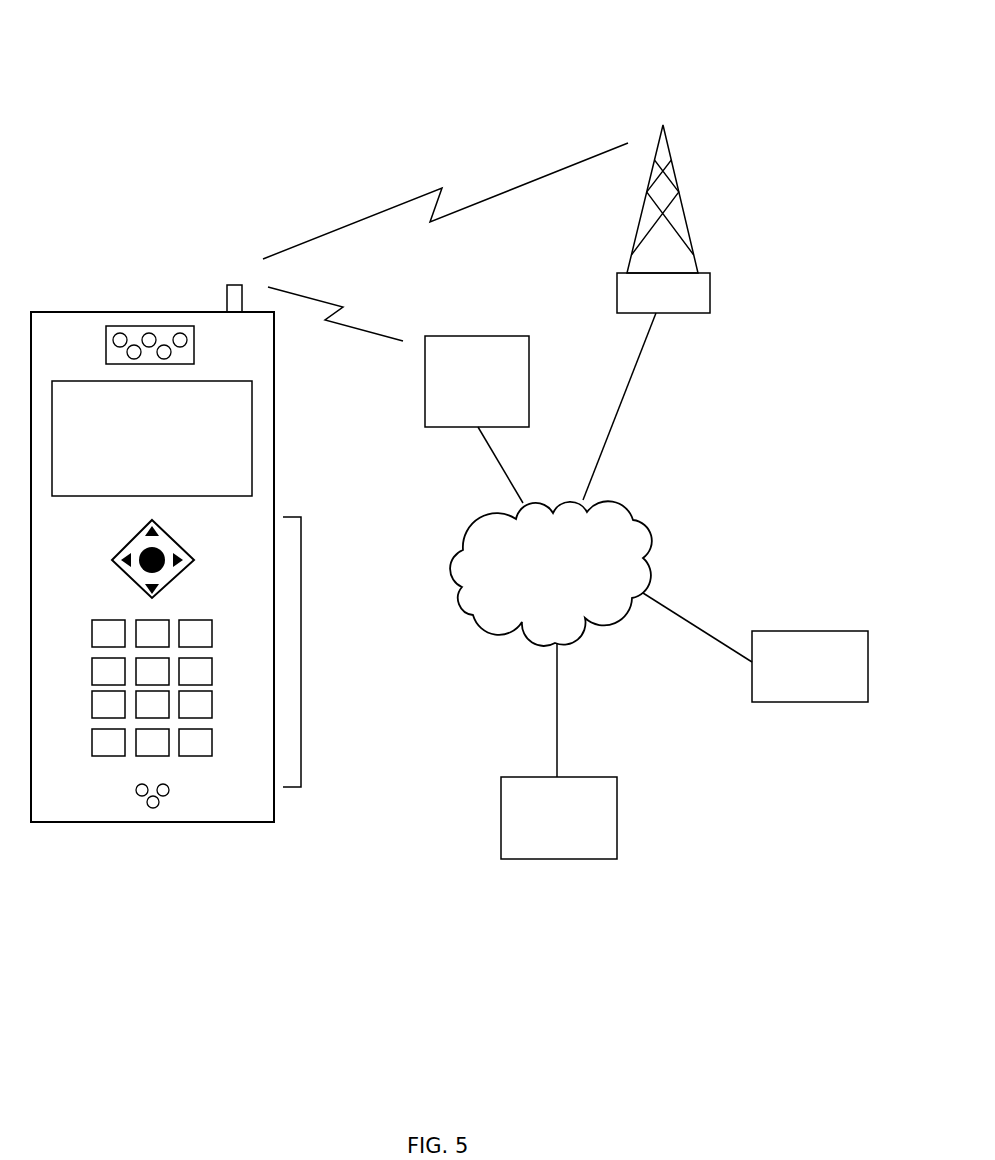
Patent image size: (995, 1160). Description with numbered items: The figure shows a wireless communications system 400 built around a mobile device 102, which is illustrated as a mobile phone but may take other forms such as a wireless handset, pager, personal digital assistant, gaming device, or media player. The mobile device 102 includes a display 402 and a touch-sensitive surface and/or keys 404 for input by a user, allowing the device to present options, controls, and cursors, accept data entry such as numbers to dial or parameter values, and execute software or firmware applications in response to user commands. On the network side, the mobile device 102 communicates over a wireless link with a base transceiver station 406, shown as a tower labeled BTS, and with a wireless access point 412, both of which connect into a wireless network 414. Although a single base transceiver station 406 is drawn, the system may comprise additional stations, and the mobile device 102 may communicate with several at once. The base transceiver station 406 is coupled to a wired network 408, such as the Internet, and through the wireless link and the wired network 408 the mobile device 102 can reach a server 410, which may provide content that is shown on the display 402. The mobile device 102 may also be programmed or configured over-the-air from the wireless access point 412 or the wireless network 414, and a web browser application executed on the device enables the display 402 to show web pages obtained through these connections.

The wireless communications system 400 is at (101, 88).
The mobile device 102 is at (75, 312).
The display 402 is at (252, 429).
The keys 404 is at (301, 655).
The base transceiver station 406 is at (710, 283).
The wired network 408 is at (556, 859).
The server 410 is at (805, 702).
The wireless access point 412 is at (487, 336).
The wireless network 414 is at (633, 520).